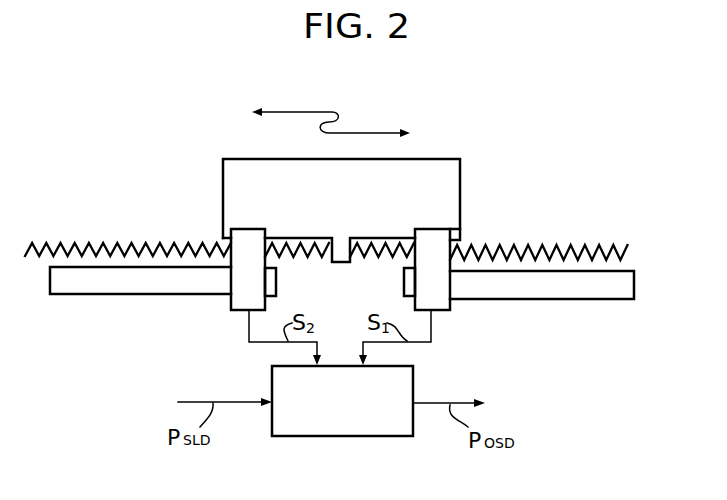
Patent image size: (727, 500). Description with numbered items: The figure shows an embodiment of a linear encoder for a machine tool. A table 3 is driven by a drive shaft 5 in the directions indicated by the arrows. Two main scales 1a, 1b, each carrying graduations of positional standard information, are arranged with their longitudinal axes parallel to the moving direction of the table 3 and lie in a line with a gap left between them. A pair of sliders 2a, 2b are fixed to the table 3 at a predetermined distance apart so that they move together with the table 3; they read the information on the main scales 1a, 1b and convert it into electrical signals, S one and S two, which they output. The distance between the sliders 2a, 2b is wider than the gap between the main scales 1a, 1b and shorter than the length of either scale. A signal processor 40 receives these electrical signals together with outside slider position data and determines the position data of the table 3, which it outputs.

The main scale 1a is at (82, 296).
The main scale 1b is at (567, 299).
The slider 2a is at (443, 310).
The slider 2b is at (240, 310).
The table 3 is at (445, 158).
The drive shaft 5 is at (528, 248).
The signal processor 40 is at (413, 389).